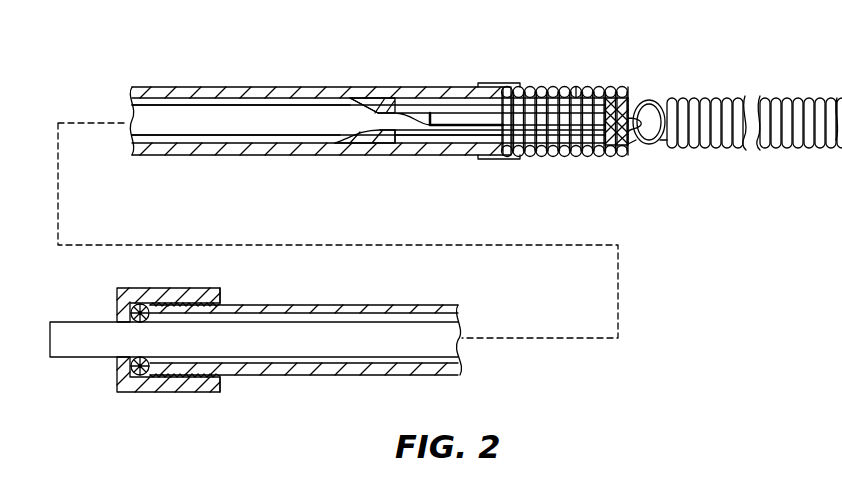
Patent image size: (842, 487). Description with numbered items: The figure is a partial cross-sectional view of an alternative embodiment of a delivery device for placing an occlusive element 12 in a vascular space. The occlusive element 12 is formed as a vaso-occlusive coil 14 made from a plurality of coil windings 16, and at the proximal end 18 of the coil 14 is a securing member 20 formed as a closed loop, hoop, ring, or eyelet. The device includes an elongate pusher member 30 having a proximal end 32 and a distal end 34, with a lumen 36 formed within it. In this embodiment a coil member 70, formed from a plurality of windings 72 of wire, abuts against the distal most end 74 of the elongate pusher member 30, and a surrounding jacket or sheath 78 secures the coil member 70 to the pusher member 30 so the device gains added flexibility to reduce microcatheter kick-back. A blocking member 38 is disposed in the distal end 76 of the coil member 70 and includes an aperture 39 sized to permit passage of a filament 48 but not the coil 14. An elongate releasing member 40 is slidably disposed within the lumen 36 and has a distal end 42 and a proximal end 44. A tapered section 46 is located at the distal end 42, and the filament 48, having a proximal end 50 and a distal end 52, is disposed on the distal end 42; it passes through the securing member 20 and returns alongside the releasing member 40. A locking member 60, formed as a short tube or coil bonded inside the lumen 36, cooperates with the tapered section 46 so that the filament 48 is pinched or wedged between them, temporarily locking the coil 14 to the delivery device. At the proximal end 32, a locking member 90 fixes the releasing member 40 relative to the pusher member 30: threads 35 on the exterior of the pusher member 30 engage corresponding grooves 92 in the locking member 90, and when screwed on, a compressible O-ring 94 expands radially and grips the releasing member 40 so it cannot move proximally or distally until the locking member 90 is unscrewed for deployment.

The occlusive element 12 is at (806, 90).
The vaso-occlusive coil 14 is at (742, 150).
The coil windings 16 is at (710, 96).
The proximal end of the coil 18 is at (664, 146).
The securing member 20 is at (636, 148).
The elongate pusher member 30 is at (254, 90).
The proximal end of the elongate pusher member 32 is at (205, 300).
The distal end of the elongate pusher member 34 is at (492, 82).
The threads 35 is at (186, 378).
The lumen 36 is at (356, 100).
The blocking member 38 is at (634, 116).
The aperture 39 is at (655, 102).
The elongate releasing member 40 is at (204, 108).
The distal end of the elongate releasing member 42 is at (396, 146).
The proximal end of the elongate releasing member 44 is at (46, 346).
The tapered section 46 is at (366, 97).
The filament 48 is at (430, 146).
The proximal end of the filament 50 is at (437, 106).
The distal end of the filament 52 is at (324, 144).
The locking member 60 is at (412, 110).
The coil member 70 is at (576, 90).
The windings 72 is at (564, 158).
The distal most end of the elongate pusher member 74 is at (502, 157).
The distal end of the coil member 76 is at (616, 150).
The jacket or sheath 78 is at (528, 90).
The locking member 90 is at (116, 289).
The grooves 92 is at (200, 384).
The O-ring 94 is at (139, 378).